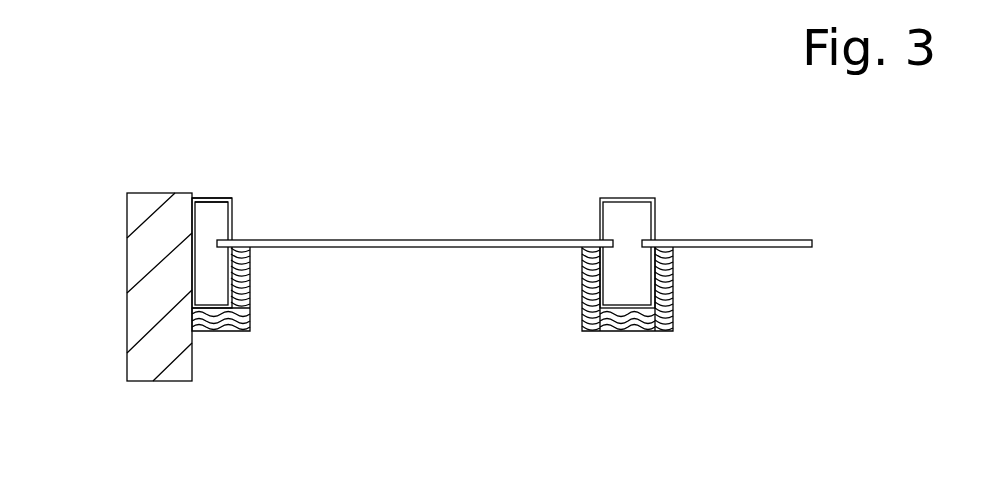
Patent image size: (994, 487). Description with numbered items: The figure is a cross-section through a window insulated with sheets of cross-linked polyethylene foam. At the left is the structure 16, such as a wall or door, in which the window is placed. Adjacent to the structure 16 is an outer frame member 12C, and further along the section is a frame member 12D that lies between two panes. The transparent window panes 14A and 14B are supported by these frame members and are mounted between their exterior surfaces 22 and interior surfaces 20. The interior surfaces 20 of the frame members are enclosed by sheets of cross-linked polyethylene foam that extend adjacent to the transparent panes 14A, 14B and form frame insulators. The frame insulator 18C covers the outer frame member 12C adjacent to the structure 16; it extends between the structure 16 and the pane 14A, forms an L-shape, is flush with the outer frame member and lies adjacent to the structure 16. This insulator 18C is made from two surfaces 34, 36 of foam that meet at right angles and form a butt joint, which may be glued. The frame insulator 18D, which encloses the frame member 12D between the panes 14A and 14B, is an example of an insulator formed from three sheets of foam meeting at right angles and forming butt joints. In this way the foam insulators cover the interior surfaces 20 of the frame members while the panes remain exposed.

The structure 16 is at (128, 238).
The exterior surface 22 is at (207, 195).
The frame member 12C is at (232, 223).
The frame member 12D is at (655, 217).
The transparent window pane 14A is at (462, 240).
The transparent window pane 14B is at (752, 237).
The surface 34 is at (250, 267).
The surface 36 is at (213, 332).
The frame insulator 18C is at (294, 331).
The frame insulator 18D is at (615, 312).
The interior surface 20 is at (632, 305).